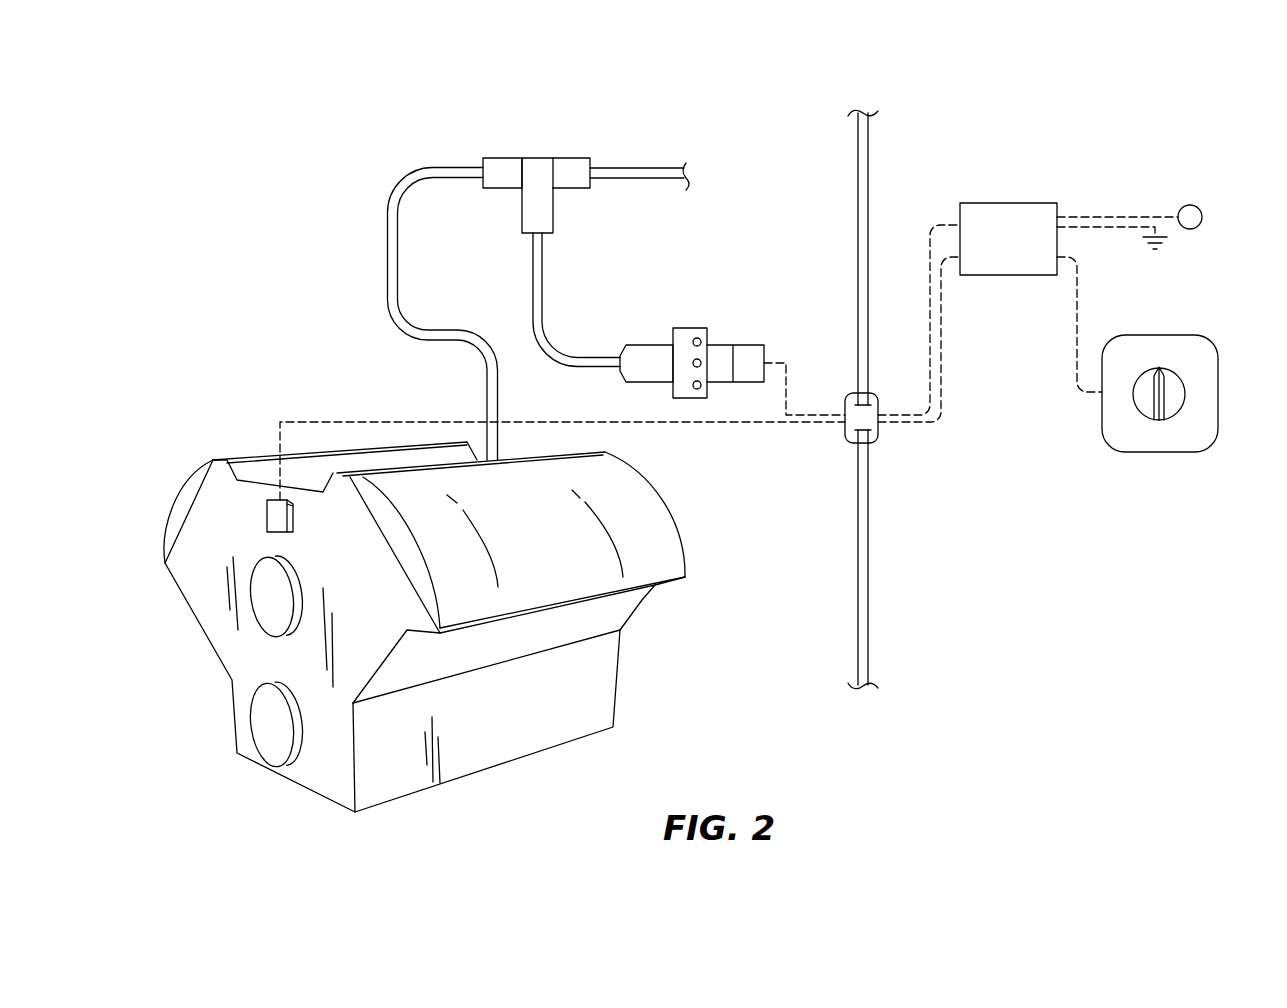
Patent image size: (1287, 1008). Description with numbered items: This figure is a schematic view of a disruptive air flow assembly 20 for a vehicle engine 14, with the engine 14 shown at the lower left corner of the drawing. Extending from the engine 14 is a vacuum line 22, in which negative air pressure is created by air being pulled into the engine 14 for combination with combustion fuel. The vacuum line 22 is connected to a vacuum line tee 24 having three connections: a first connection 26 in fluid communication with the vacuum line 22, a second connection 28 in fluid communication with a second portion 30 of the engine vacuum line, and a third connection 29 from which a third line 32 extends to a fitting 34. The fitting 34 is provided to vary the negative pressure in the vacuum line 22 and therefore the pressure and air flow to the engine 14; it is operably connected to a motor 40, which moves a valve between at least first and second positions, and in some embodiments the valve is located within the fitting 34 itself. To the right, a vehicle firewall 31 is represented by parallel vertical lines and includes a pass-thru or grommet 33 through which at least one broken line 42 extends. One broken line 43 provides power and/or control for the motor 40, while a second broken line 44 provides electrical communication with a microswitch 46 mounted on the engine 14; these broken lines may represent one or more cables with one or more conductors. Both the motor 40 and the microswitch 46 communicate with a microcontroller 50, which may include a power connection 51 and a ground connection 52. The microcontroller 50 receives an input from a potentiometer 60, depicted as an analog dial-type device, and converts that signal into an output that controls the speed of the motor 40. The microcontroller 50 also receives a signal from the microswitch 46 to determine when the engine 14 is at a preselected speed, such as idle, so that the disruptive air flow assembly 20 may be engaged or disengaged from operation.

The vehicle engine 14 is at (243, 443).
The disruptive air flow assembly 20 is at (237, 183).
The vacuum line 22 is at (387, 257).
The vacuum line tee 24 is at (555, 142).
The first connection 26 is at (502, 170).
The second connection 28 is at (580, 167).
The third connection 29 is at (553, 213).
The second portion of the engine vacuum line 30 is at (658, 167).
The vehicle firewall 31 is at (873, 180).
The third line 32 is at (543, 292).
The grommet 33 is at (873, 393).
The fitting 34 is at (695, 308).
The motor 40 is at (747, 352).
The broken line 42 is at (822, 428).
The broken line 43 is at (787, 378).
The second broken line 44 is at (733, 423).
The microswitch 46 is at (267, 520).
The microcontroller 50 is at (1017, 198).
The power connection 51 is at (1197, 210).
The ground connection 52 is at (1155, 249).
The potentiometer 60 is at (1155, 453).